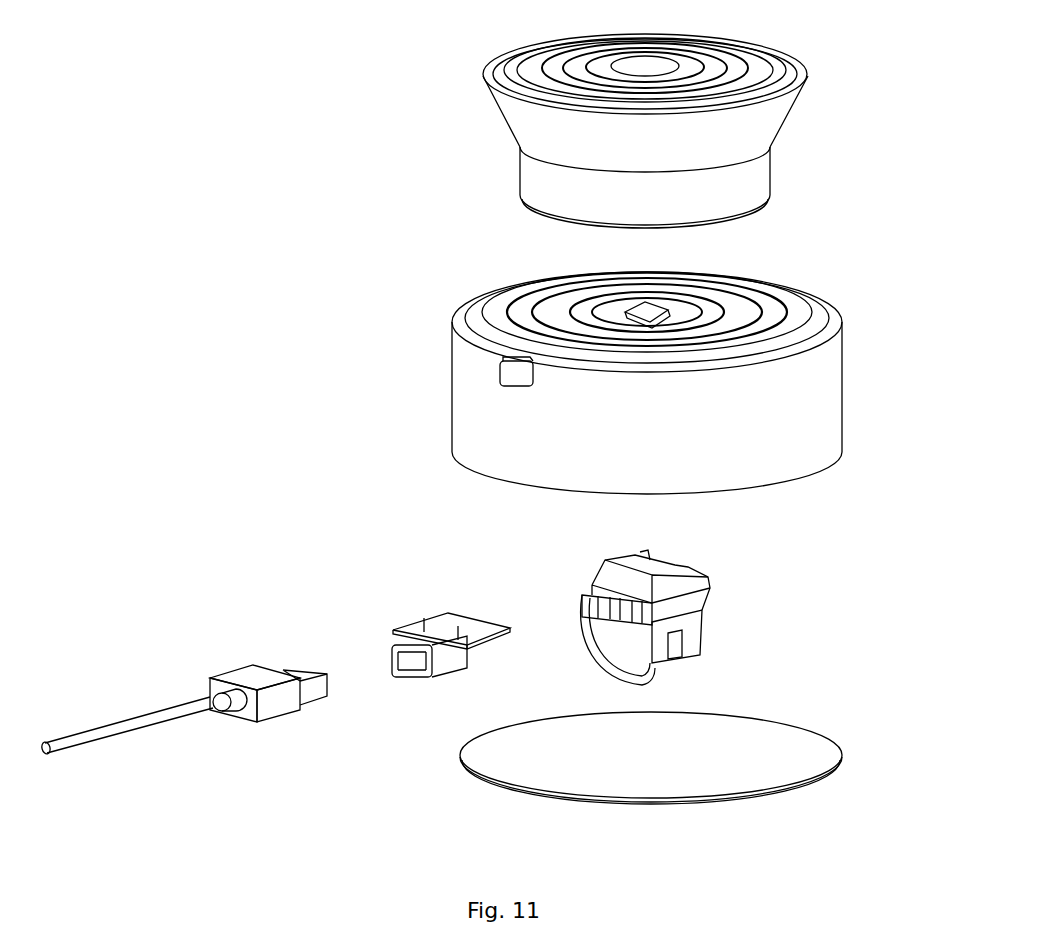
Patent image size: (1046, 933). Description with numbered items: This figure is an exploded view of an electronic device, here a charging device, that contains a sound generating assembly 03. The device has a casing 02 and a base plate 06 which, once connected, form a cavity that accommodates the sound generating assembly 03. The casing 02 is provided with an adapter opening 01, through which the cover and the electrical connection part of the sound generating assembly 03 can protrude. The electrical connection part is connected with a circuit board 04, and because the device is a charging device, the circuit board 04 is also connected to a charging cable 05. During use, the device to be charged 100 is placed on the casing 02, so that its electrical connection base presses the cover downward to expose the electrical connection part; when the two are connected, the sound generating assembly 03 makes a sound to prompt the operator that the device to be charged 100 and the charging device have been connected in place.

The device to be charged 100 is at (770, 170).
The adapter opening 01 is at (653, 312).
The casing 02 is at (830, 413).
The sound generating assembly 03 is at (707, 625).
The circuit board 04 is at (438, 615).
The charging cable 05 is at (230, 668).
The base plate 06 is at (843, 757).